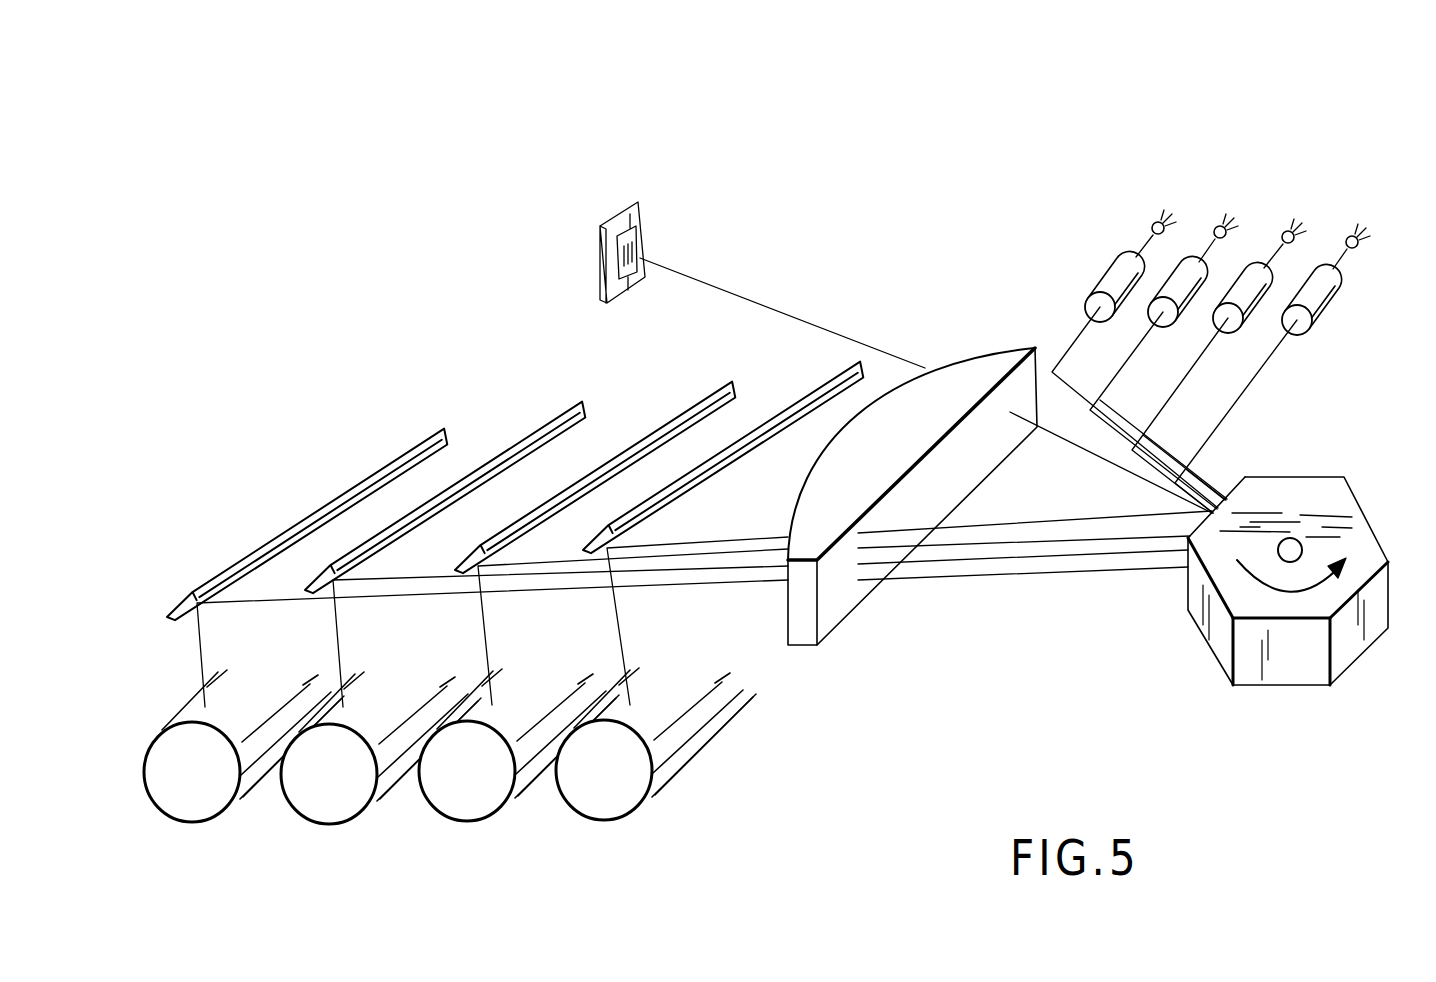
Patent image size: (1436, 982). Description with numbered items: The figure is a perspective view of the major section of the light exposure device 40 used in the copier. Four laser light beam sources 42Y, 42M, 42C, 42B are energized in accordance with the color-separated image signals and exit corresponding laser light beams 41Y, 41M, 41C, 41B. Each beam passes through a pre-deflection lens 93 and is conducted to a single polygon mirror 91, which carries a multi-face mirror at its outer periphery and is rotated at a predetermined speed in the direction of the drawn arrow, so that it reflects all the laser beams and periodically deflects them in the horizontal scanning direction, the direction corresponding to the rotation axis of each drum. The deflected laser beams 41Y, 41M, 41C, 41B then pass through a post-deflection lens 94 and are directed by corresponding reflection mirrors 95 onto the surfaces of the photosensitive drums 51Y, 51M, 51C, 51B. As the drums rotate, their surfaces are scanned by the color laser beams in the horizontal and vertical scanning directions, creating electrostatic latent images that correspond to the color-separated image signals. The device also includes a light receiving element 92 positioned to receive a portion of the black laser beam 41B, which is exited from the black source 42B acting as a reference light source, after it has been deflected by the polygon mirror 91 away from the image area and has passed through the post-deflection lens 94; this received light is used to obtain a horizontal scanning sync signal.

The light exposure device 40 is at (880, 134).
The laser light beam 41B is at (203, 650).
The laser light beam 41C is at (343, 650).
The laser light beam 41M is at (492, 650).
The laser light beam 41Y is at (626, 650).
The laser light beam source 42B is at (1156, 222).
The laser light beam source 42C is at (1222, 226).
The laser light beam source 42M is at (1291, 231).
The laser light beam source 42Y is at (1356, 236).
The photosensitive drum 51B is at (208, 805).
The photosensitive drum 51C is at (348, 807).
The photosensitive drum 51M is at (488, 804).
The photosensitive drum 51Y is at (626, 803).
The polygon mirror 91 is at (1377, 548).
The light receiving element 92 is at (647, 220).
The pre-deflection lens 93 is at (1101, 268).
The post-deflection lens 94 is at (953, 351).
The reflection mirror 95 is at (401, 457).